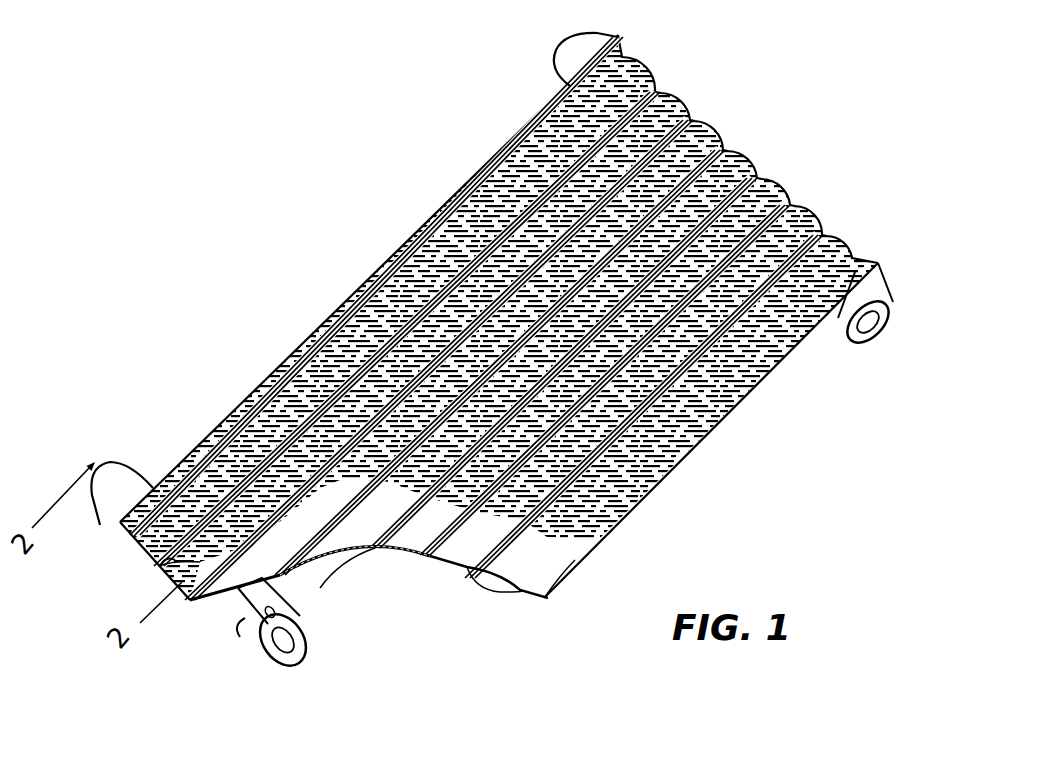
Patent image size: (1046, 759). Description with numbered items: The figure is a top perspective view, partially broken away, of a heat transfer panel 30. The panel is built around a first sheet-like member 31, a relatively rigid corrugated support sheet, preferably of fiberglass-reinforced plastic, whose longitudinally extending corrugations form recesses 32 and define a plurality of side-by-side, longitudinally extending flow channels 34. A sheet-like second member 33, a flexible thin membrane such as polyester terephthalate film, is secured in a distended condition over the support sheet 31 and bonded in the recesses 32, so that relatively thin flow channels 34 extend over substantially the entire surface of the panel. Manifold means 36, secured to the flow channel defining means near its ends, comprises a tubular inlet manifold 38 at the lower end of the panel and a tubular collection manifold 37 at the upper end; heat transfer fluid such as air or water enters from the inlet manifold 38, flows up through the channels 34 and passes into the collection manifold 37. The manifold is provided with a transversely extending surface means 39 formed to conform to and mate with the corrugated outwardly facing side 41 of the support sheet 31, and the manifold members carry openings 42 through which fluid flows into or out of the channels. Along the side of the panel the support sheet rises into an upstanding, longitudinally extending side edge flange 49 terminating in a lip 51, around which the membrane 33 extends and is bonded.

The heat transfer panel 30 is at (690, 487).
The first sheet-like member 31 is at (405, 557).
The recesses 32 is at (427, 556).
The sheet-like second member 33 is at (332, 372).
The flow channels 34 is at (515, 588).
The manifold means 36 is at (895, 281).
The tubular collection manifold 37 is at (836, 350).
The tubular inlet manifold 38 is at (235, 614).
The transversely extending surface means 39 is at (292, 648).
The outwardly facing side 41 is at (375, 550).
The openings 42 is at (160, 567).
The side edge flange 49 is at (868, 265).
The lip 51 is at (212, 425).